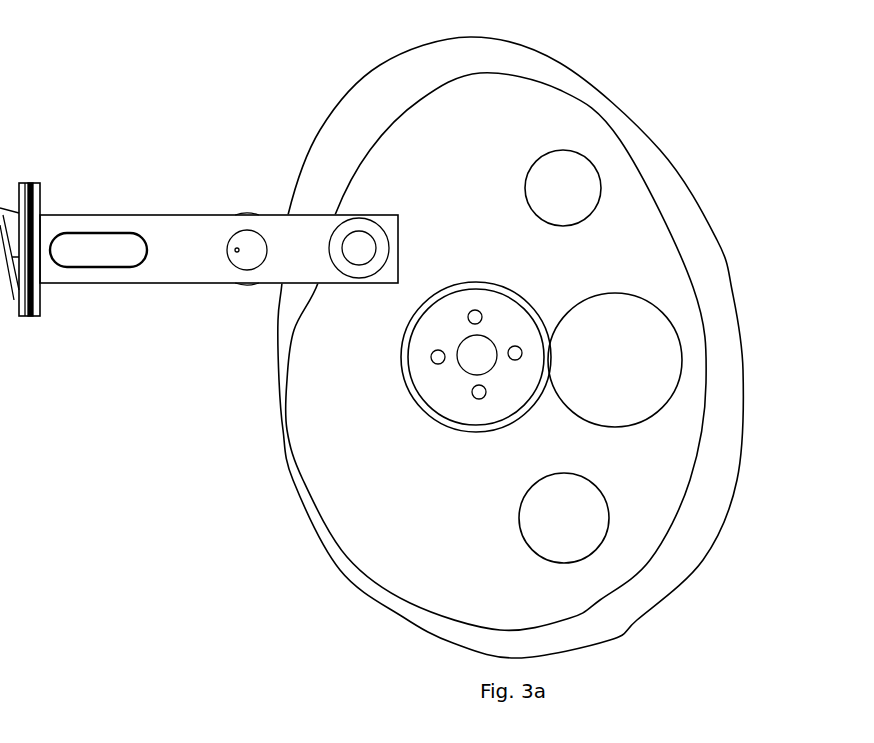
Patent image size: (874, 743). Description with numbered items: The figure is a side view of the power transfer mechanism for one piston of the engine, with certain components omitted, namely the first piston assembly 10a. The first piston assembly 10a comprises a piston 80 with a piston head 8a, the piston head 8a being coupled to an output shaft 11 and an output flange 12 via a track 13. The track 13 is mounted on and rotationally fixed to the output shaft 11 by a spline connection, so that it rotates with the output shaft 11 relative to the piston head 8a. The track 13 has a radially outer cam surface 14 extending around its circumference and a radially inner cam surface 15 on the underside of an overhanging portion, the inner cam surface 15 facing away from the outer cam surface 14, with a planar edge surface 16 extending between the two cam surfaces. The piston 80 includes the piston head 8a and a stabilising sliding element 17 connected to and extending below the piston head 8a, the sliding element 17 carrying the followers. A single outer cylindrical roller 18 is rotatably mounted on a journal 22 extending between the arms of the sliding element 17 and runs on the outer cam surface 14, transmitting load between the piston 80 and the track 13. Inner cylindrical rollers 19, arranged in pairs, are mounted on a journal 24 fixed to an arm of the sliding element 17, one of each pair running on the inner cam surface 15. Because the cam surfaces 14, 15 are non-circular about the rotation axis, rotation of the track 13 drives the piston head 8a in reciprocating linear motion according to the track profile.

The piston head 8a is at (23, 180).
The piston 80 is at (53, 217).
The stabilising sliding element 17 is at (160, 243).
The outer cylindrical roller 18 is at (235, 215).
The journal 22 is at (240, 258).
The inner cylindrical rollers 19 is at (368, 230).
The journal 24 is at (363, 253).
The first piston assembly 10a is at (712, 152).
The output flange 12 is at (502, 330).
The output shaft 11 is at (473, 360).
The track 13 is at (677, 572).
The outer cam surface 14 is at (743, 452).
The inner cam surface 15 is at (697, 442).
The planar edge surface 16 is at (718, 377).